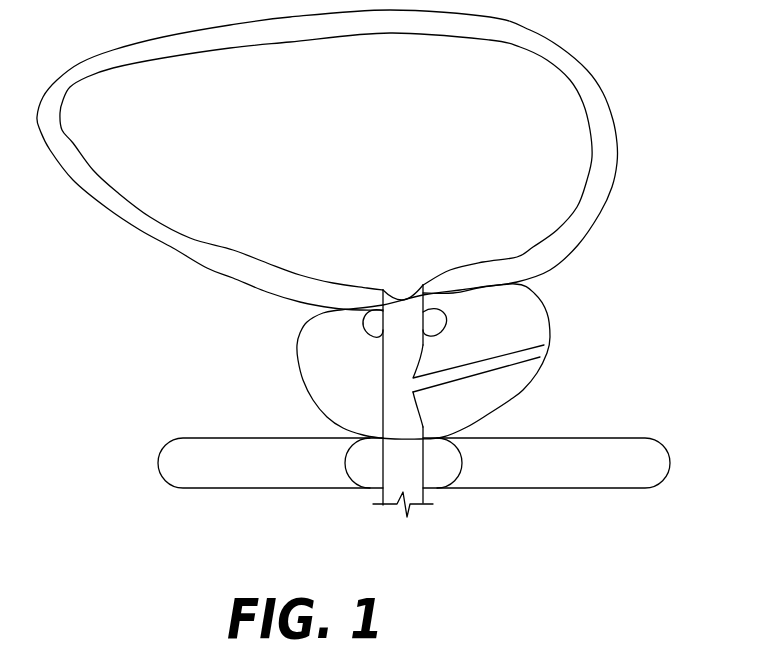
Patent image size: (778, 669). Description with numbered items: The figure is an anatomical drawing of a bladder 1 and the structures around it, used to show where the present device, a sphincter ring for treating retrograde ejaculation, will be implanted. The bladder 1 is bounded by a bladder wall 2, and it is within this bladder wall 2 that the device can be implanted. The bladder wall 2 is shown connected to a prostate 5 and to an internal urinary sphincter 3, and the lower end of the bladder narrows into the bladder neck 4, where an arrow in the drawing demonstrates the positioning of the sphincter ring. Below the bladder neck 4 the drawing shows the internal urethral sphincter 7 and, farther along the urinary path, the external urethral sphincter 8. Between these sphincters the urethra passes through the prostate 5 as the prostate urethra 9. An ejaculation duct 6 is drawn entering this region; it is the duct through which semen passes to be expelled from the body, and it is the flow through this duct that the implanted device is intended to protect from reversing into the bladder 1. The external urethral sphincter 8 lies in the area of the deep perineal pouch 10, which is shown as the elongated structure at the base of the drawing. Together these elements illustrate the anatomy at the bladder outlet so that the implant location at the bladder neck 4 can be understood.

The bladder 1 is at (553, 105).
The bladder wall 2 is at (607, 177).
The internal urinary sphincter 3 is at (394, 308).
The bladder neck 4 is at (453, 296).
The prostate 5 is at (325, 409).
The ejaculation duct 6 is at (445, 380).
The internal urethral sphincter 7 is at (441, 321).
The external urethral sphincter 8 is at (462, 463).
The prostate urethra 9 is at (417, 425).
The deep perineal pouch 10 is at (662, 462).